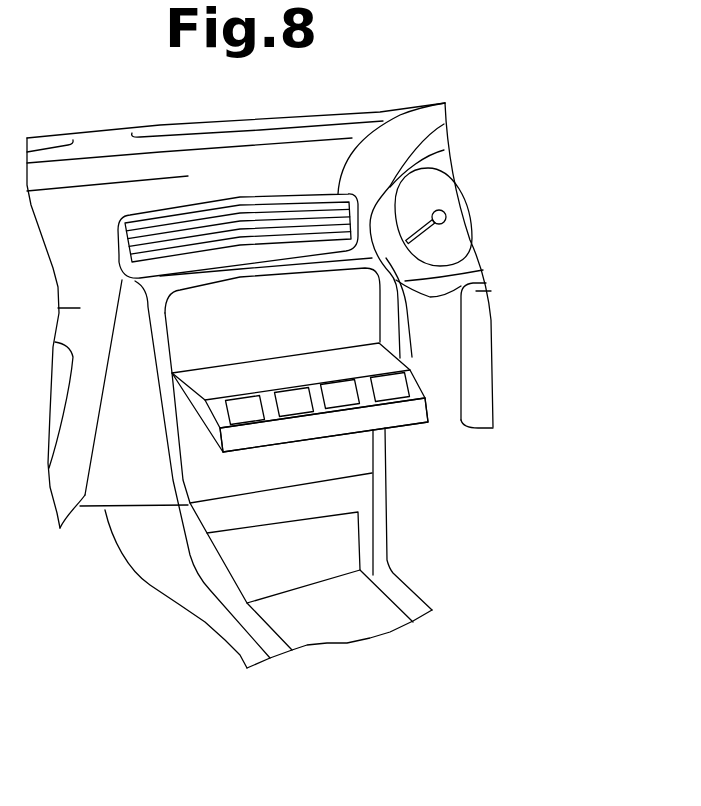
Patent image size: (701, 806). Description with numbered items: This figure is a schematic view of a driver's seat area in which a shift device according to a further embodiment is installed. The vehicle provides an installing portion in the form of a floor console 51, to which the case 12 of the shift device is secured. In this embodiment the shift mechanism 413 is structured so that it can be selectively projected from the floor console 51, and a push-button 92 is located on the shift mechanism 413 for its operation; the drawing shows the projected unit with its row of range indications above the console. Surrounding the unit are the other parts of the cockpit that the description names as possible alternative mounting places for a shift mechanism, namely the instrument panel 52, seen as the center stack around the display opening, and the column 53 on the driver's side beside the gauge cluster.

The case 12 is at (286, 363).
The instrument panel 52 is at (177, 349).
The column 53 is at (482, 347).
The push-button 92 is at (292, 415).
The shift mechanism 413 is at (423, 415).
The floor console 51 is at (395, 625).